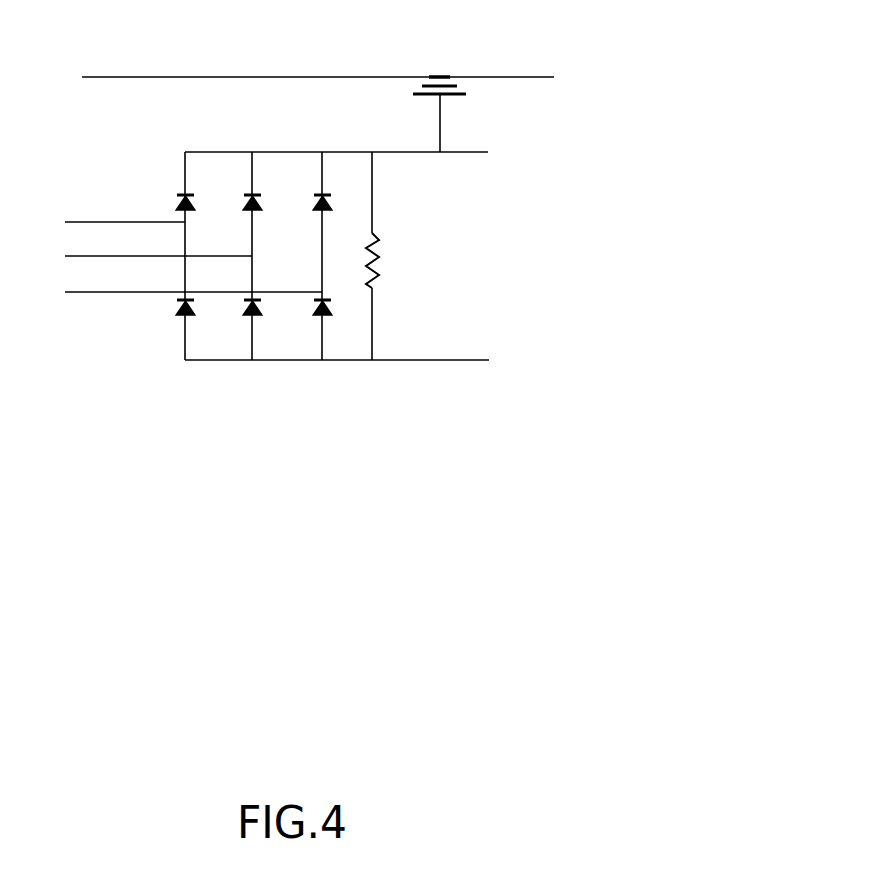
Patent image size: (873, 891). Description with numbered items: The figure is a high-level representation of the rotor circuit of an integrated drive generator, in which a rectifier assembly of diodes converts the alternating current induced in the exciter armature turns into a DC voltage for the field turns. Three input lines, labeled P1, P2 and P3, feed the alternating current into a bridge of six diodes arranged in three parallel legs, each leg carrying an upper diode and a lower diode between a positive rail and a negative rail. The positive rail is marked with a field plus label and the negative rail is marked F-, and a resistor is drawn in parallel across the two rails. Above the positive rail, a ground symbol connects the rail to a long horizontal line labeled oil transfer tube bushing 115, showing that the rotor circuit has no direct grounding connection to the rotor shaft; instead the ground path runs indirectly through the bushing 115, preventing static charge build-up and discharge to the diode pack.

The oil transfer tube bushing 115 is at (513, 77).
The phase 1 input terminal P1 is at (111, 221).
The phase 2 input terminal P2 is at (144, 257).
The phase 3 input terminal P3 is at (179, 292).
The negative field output terminal F- is at (508, 360).